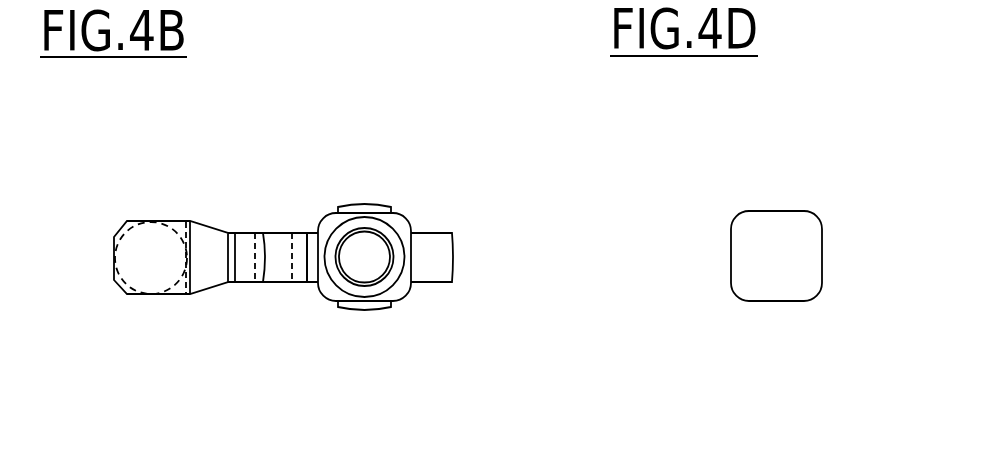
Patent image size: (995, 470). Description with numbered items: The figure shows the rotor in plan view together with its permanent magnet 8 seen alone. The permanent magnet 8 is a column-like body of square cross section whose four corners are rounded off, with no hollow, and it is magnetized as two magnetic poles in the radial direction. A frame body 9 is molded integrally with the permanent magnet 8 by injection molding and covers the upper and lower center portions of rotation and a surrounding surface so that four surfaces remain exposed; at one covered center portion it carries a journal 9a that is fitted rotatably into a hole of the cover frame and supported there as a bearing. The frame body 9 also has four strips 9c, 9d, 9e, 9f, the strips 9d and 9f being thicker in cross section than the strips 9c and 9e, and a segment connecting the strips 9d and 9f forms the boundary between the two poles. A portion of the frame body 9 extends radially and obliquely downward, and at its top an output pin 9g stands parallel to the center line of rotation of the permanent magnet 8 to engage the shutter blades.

In FIG. 4B, the permanent magnet 8 is at (403, 218).
In FIG. 4D, the permanent magnet 8 is at (778, 220).
In FIG. 4B, the frame body 9 is at (307, 253).
In FIG. 4B, the journal 9a is at (355, 252).
In FIG. 4B, the strip 9c is at (366, 205).
In FIG. 4B, the strip 9d is at (441, 263).
In FIG. 4B, the strip 9e is at (368, 308).
In FIG. 4B, the strip 9f is at (307, 253).
In FIG. 4B, the output pin 9g is at (146, 255).